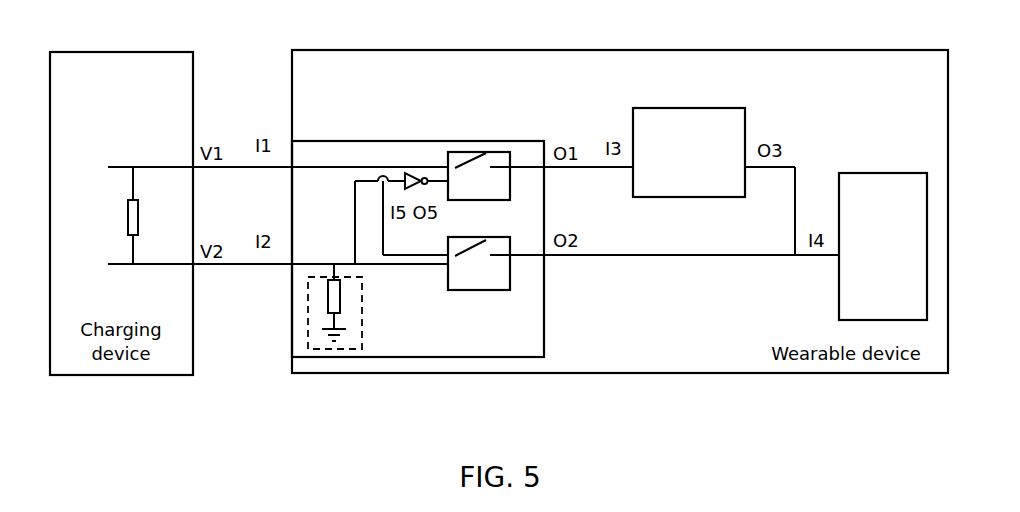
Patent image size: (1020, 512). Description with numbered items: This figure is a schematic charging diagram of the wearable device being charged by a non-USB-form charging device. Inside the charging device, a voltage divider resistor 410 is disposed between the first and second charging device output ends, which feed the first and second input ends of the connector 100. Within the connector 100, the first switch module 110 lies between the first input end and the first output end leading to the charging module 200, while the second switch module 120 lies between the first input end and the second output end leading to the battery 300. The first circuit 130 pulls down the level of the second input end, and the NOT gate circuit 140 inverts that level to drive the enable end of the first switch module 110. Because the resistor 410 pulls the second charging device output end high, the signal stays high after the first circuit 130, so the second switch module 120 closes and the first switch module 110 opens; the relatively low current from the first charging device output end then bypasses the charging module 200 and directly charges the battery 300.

The connector 100 is at (348, 141).
The first switch module 110 is at (470, 162).
The second switch module 120 is at (484, 290).
The first circuit 130 is at (330, 352).
The NOT gate circuit 140 is at (428, 172).
The charging module 200 is at (690, 108).
The battery 300 is at (886, 173).
The voltage divider resistor 410 is at (123, 213).